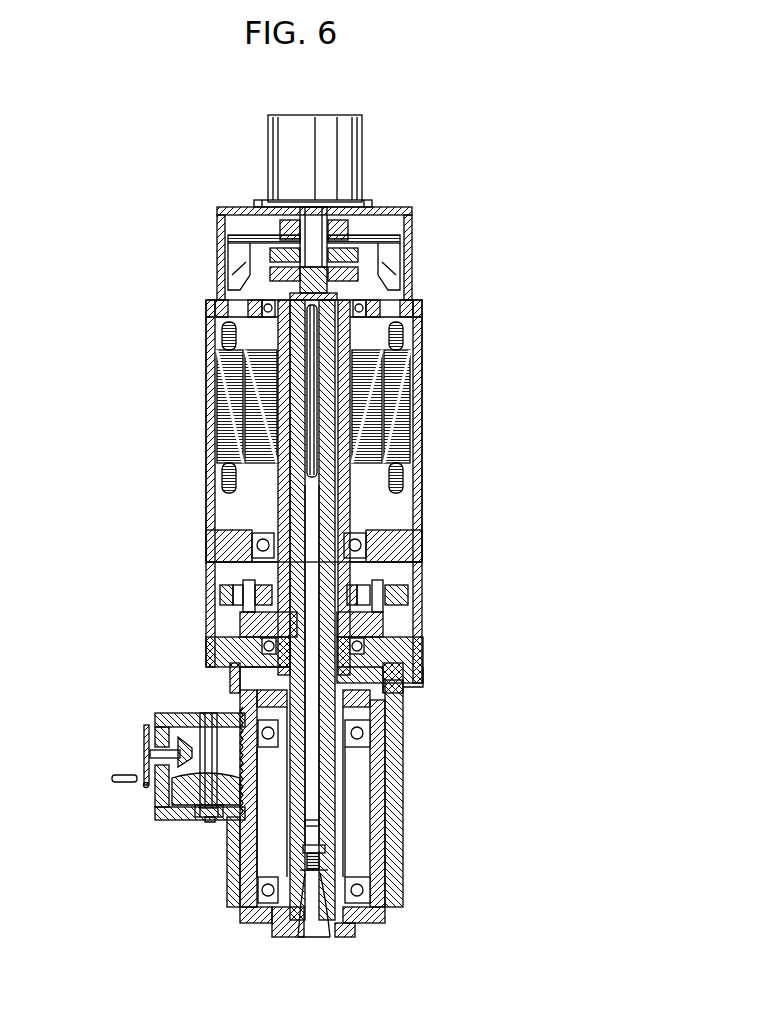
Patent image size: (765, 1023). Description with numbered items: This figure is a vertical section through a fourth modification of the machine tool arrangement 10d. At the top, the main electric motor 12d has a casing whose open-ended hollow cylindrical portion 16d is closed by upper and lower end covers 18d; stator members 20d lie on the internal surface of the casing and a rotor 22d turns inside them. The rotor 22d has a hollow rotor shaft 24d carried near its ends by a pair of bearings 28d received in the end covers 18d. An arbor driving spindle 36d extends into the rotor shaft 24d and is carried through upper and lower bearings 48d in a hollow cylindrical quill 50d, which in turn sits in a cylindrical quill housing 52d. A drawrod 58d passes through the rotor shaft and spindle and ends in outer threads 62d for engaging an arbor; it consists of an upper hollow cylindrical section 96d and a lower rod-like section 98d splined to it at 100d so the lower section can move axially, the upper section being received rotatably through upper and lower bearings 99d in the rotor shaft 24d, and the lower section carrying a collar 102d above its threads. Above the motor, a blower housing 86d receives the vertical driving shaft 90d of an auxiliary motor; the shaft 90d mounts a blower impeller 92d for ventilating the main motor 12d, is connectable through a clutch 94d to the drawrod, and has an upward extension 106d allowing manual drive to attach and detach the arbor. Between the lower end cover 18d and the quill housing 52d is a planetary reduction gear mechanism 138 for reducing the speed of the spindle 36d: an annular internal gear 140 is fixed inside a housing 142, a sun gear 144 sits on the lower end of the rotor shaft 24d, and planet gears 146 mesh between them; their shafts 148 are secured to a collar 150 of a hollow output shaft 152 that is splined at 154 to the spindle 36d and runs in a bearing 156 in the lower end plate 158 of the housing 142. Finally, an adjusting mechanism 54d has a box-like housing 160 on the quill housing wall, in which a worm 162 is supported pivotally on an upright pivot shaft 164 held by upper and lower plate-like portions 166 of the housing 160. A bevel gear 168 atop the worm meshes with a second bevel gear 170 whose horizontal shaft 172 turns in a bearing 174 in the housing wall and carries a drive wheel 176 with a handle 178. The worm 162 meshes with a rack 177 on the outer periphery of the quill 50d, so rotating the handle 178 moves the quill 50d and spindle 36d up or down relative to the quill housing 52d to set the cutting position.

The machine tool arrangement 10d is at (205, 379).
The main electric motor 12d is at (245, 358).
The hollow cylindrical portion 16d is at (212, 405).
The end covers 18d is at (215, 300).
The stator members 20d is at (212, 430).
The rotor 22d is at (413, 465).
The hollow rotor shaft 24d is at (262, 318).
The bearings 28d is at (420, 310).
The arbor driving spindle 36d is at (378, 545).
The bearings 48d is at (362, 735).
The quill 50d is at (383, 805).
The quill housing 52d is at (390, 780).
The axial position adjusting mechanism 54d is at (136, 816).
The drawrod 58d is at (305, 523).
The outer threads 62d is at (322, 880).
The blower housing 86d is at (232, 207).
The driving shaft 90d is at (318, 217).
The blower impeller 92d is at (224, 240).
The clutch 94d is at (357, 257).
The upper drawrod section 96d is at (333, 370).
The lower drawrod section 98d is at (300, 862).
The bearings 99d is at (345, 300).
The spline 100d is at (320, 425).
The collar 102d is at (325, 848).
The shaft extension 106d is at (328, 118).
The planetary reduction gear mechanism 138 is at (205, 588).
The annular internal gear 140 is at (380, 598).
The housing 142 is at (222, 620).
The sun gear 144 is at (385, 583).
The planet gears 146 is at (222, 588).
The planet gear shafts 148 is at (222, 598).
The collar 150 is at (364, 645).
The output shaft 152 is at (360, 681).
The spline 154 is at (260, 679).
The bearing 156 is at (418, 690).
The lower end plate 158 is at (400, 655).
The box-like housing 160 is at (188, 822).
The worm 162 is at (172, 820).
The pivot shaft 164 is at (205, 822).
The plate-like portions 166 is at (163, 713).
The bevel gear 168 is at (178, 810).
The second bevel gear 170 is at (160, 747).
The horizontal shaft 172 is at (142, 757).
The bearing 174 is at (160, 751).
The drive wheel 176 is at (146, 788).
The rack 177 is at (243, 707).
The handle 178 is at (112, 780).